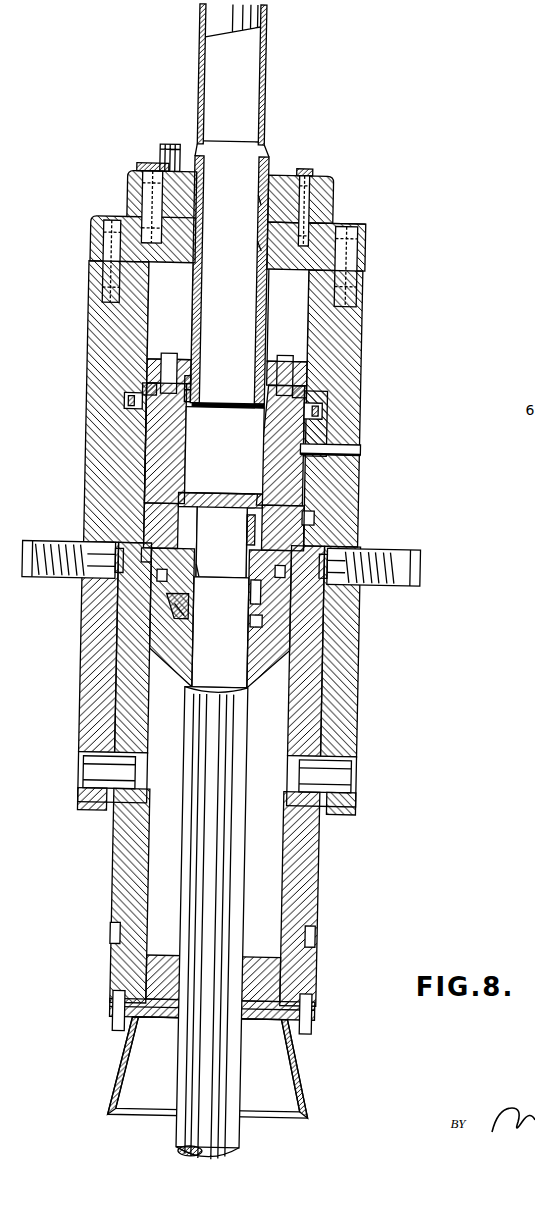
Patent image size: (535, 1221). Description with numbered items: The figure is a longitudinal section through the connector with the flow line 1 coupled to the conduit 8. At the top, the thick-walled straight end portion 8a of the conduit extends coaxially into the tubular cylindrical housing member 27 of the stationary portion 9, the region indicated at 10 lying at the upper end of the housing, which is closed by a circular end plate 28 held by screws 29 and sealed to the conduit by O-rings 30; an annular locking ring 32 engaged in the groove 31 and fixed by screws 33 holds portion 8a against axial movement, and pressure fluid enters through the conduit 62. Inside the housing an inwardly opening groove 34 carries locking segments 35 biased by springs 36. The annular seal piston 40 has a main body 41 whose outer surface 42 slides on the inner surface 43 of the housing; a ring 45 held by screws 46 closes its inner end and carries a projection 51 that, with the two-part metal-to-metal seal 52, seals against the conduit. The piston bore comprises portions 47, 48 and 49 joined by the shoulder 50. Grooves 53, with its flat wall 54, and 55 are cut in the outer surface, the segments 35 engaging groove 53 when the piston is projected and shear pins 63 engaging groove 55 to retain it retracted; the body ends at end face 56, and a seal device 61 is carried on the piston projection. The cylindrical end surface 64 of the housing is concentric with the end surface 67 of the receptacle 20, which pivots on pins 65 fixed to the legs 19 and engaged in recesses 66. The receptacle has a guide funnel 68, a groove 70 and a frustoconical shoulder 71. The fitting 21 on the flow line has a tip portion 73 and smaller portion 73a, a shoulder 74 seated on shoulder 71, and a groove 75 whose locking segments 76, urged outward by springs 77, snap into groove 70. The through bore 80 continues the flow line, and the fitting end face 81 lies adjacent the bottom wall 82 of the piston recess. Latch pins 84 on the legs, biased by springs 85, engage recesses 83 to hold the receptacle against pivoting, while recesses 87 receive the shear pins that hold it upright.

The flow line 1 is at (196, 1126).
The conduit 8 is at (267, 70).
The end portion of conduit 8a is at (223, 309).
The stationary portion of connector 9 is at (92, 217).
The flange assembly 10 is at (410, 197).
The legs 19 is at (93, 720).
The receptacle 20 is at (338, 857).
The fitting 21 is at (188, 660).
The tubular cylindrical housing member 27 is at (368, 304).
The circular end plate 28 is at (370, 250).
The screws 29 is at (354, 222).
The O-rings 30 is at (262, 252).
The transverse annular groove 31 is at (262, 196).
The annular locking ring 32 is at (338, 188).
The screws 33 is at (312, 166).
The inwardly opening annular groove 34 is at (336, 408).
The locking segments 35 is at (152, 378).
The springs 36 is at (134, 396).
The annular seal piston 40 is at (225, 450).
The main body of piston 41 is at (167, 452).
The outer cylindrical surface 42 is at (150, 452).
The inner cylindrical surface 43 is at (158, 304).
The ring 45 is at (188, 352).
The screws 46 is at (292, 350).
The cylindrical bore portion 47 is at (262, 398).
The intermediate cylindrical bore portion 48 is at (205, 446).
The cylindrical tip bore portion 49 is at (209, 548).
The shoulder 50 is at (207, 497).
The annular axially directed projection 51 is at (200, 380).
The two-part annular metal-to-metal seal 52 is at (200, 393).
The outwardly opening annular groove 53 is at (280, 445).
The flat transverse wall 54 is at (165, 443).
The outwardly opening annular groove 55 is at (326, 514).
The transverse annular end face 56 is at (152, 552).
The two-part metal-to-metal annular seal device 61 is at (210, 566).
The conduit 62 is at (168, 142).
The shear pins 63 is at (322, 450).
The end surface 64 is at (147, 497).
The pivot pins 65 is at (98, 766).
The cylindrical recesses 66 is at (216, 809).
The end surface 67 is at (326, 508).
The guide funnel 68 is at (133, 1095).
The transverse annular groove 70 is at (304, 580).
The frustoconical shoulder 71 is at (165, 574).
The tip portion of fitting 73 is at (268, 592).
The remainder of tip portion 73a is at (257, 522).
The frusto-conical annular shoulder 74 is at (293, 572).
The outwardly opening annular groove 75 is at (262, 620).
The arcuate locking segments 76 is at (177, 600).
The springs 77 is at (196, 605).
The through bore 80 is at (221, 648).
The flat transverse annular end face 81 is at (282, 510).
The bottom wall of annular recess 82 is at (163, 512).
The recesses 83 is at (126, 586).
The latch pins 84 is at (100, 583).
The springs 85 is at (56, 578).
The recesses 87 is at (128, 932).